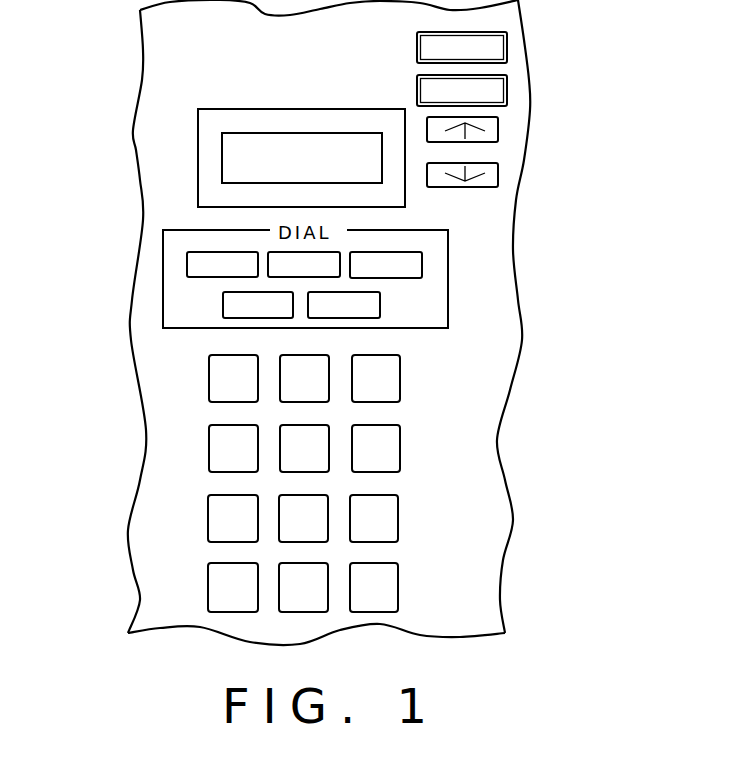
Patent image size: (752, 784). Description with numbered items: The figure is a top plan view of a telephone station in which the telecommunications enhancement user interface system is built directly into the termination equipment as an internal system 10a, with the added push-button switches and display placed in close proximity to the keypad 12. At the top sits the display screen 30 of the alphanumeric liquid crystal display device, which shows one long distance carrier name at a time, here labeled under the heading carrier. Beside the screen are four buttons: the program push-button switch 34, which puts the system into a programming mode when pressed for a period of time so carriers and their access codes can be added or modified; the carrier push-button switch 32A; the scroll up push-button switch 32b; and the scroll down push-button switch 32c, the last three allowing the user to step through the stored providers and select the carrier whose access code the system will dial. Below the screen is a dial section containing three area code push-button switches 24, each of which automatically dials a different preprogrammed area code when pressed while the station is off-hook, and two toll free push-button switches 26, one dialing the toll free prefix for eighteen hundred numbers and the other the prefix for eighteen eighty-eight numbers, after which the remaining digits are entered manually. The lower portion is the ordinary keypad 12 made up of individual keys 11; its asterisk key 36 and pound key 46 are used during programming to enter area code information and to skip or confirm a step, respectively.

The internal telecommunications enhancement user interface system 10a is at (625, 219).
The display screen 30 is at (198, 152).
The program push-button switch 34 is at (492, 32).
The carrier push-button switch 32A is at (507, 93).
The scroll up push-button switch 32b is at (498, 130).
The scroll down push-button switch 32c is at (498, 178).
The area code push-button switch 24 is at (268, 252).
The toll free push-button switch 26 is at (223, 309).
The keypad 12 is at (338, 483).
The key 11 is at (400, 448).
The asterisk key 36 is at (208, 588).
The pound key 46 is at (398, 586).